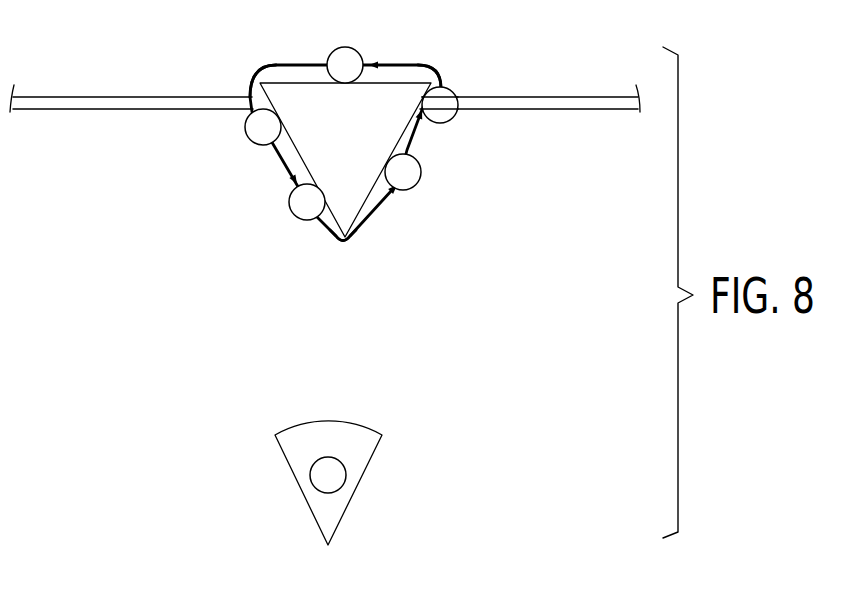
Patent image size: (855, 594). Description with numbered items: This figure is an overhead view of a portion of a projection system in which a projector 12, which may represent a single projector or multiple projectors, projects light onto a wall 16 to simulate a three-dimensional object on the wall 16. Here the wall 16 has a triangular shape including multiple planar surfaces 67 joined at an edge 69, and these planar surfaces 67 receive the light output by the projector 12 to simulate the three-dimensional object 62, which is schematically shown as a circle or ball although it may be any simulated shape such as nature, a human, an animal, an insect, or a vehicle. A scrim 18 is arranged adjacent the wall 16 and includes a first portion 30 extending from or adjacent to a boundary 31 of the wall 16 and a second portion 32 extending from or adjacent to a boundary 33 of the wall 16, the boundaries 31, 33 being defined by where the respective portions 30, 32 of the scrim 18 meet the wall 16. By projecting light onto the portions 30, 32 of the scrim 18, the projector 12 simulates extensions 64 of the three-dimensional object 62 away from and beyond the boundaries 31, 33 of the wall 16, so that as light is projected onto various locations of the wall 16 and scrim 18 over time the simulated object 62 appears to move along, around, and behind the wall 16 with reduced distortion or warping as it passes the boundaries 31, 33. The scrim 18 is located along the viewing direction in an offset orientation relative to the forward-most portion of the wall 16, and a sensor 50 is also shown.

The projector 12 is at (362, 448).
The wall 16 is at (327, 93).
The scrim 18 is at (325, 82).
The first portion 30 is at (146, 99).
The second portion 32 is at (542, 100).
The boundary 31 is at (279, 112).
The boundary 33 is at (427, 81).
The sensor 50 is at (313, 463).
The 3-D object 62 is at (288, 220).
The extensions 64 is at (243, 141).
The planar surfaces 67 is at (280, 160).
The edge 69 is at (344, 244).